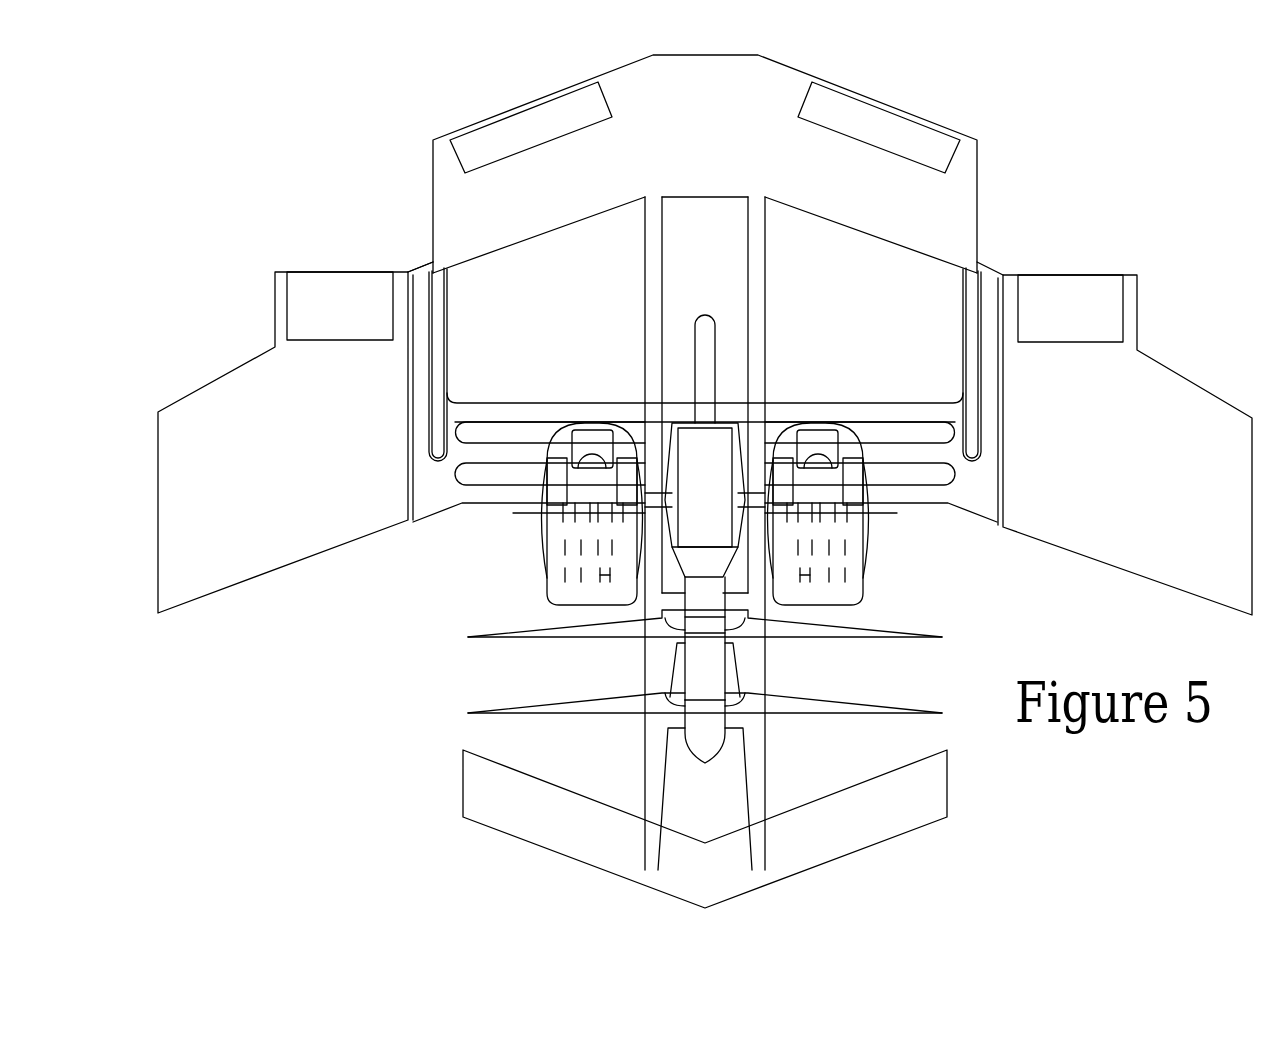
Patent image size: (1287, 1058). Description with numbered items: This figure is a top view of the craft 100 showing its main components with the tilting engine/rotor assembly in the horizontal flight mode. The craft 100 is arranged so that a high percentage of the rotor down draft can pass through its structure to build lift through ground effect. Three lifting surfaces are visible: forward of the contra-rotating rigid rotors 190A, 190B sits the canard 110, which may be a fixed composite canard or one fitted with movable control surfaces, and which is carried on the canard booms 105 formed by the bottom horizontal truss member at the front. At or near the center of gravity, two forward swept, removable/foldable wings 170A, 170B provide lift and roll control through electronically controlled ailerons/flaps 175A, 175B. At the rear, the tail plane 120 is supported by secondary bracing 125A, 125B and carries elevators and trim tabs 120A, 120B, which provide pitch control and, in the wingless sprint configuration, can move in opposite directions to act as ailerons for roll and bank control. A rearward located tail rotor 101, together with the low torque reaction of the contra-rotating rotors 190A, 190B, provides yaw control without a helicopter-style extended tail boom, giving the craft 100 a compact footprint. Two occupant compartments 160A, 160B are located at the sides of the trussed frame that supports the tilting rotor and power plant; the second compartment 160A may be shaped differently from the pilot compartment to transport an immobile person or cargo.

The craft 100 is at (245, 723).
The tail rotor 101 is at (707, 308).
The canard booms 105 is at (645, 768).
The canard 110 is at (705, 829).
The tail plane 120 is at (705, 165).
The elevator 120A is at (531, 127).
The elevator 120B is at (879, 127).
The secondary bracing 125A is at (645, 297).
The secondary bracing 125B is at (767, 297).
The occupant compartment 160A is at (547, 578).
The occupant compartment 160B is at (872, 558).
The wing 170A is at (295, 437).
The wing 170B is at (1125, 445).
The aileron/flap 175A is at (340, 306).
The aileron/flap 175B is at (1070, 308).
The rotor 190A is at (530, 632).
The rotor 190B is at (543, 705).